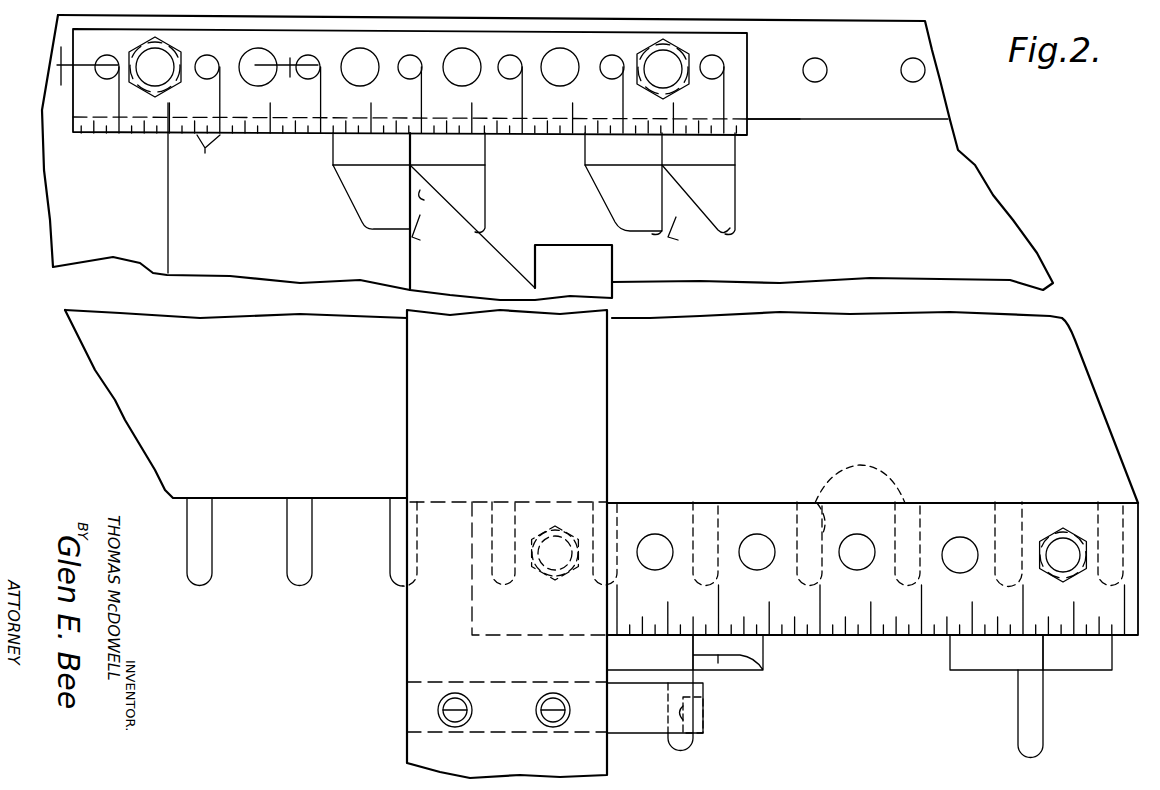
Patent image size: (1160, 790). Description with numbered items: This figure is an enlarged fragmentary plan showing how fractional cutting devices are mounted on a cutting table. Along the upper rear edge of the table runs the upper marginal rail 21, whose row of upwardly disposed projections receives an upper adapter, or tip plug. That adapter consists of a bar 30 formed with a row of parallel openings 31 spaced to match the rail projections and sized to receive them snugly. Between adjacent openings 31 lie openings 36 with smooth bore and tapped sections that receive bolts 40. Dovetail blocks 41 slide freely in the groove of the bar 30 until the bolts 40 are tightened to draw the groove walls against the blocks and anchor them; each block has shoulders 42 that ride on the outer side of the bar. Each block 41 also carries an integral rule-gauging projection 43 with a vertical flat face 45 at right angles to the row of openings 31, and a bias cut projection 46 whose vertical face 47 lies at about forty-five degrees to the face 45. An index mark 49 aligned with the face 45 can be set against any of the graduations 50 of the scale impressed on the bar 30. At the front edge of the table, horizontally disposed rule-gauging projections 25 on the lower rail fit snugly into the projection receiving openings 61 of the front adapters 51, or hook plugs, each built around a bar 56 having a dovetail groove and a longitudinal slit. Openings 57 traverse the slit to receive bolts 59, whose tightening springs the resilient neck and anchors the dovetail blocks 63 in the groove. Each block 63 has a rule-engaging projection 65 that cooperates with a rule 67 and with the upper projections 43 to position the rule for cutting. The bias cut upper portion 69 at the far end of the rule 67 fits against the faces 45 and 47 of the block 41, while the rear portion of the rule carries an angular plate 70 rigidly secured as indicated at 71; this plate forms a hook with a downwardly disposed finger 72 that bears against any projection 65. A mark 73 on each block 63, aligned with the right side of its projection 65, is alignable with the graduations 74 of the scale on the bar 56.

The upper marginal rail 21 is at (915, 120).
The rule-gauging projections 25 is at (290, 575).
The bar 30 is at (737, 90).
The openings 31 is at (506, 78).
The openings 36 is at (563, 83).
The bolts 40 is at (687, 61).
The dovetail blocks 41 is at (752, 155).
The shoulders 42 is at (750, 121).
The rule-gauging projection 43 is at (640, 246).
The vertical flat face 45 is at (556, 234).
The bias cut projection 46 is at (737, 199).
The vertical face 47 is at (713, 224).
The index mark 49 is at (672, 153).
The graduations 50 is at (206, 155).
The front adapters 51 is at (881, 644).
The bar 56 is at (1140, 637).
The openings 57 is at (748, 548).
The bolts 59 is at (1072, 528).
The projection receiving openings 61 is at (860, 499).
The dovetail blocks 63 is at (1112, 672).
The rule-engaging projection 65 is at (1044, 748).
The rule 67 is at (610, 416).
The bias cut upper portion 69 is at (424, 197).
The angular plate 70 is at (637, 736).
The securing means 71 is at (550, 698).
The finger 72 is at (705, 716).
The mark 73 is at (763, 652).
The graduations 74 is at (938, 637).